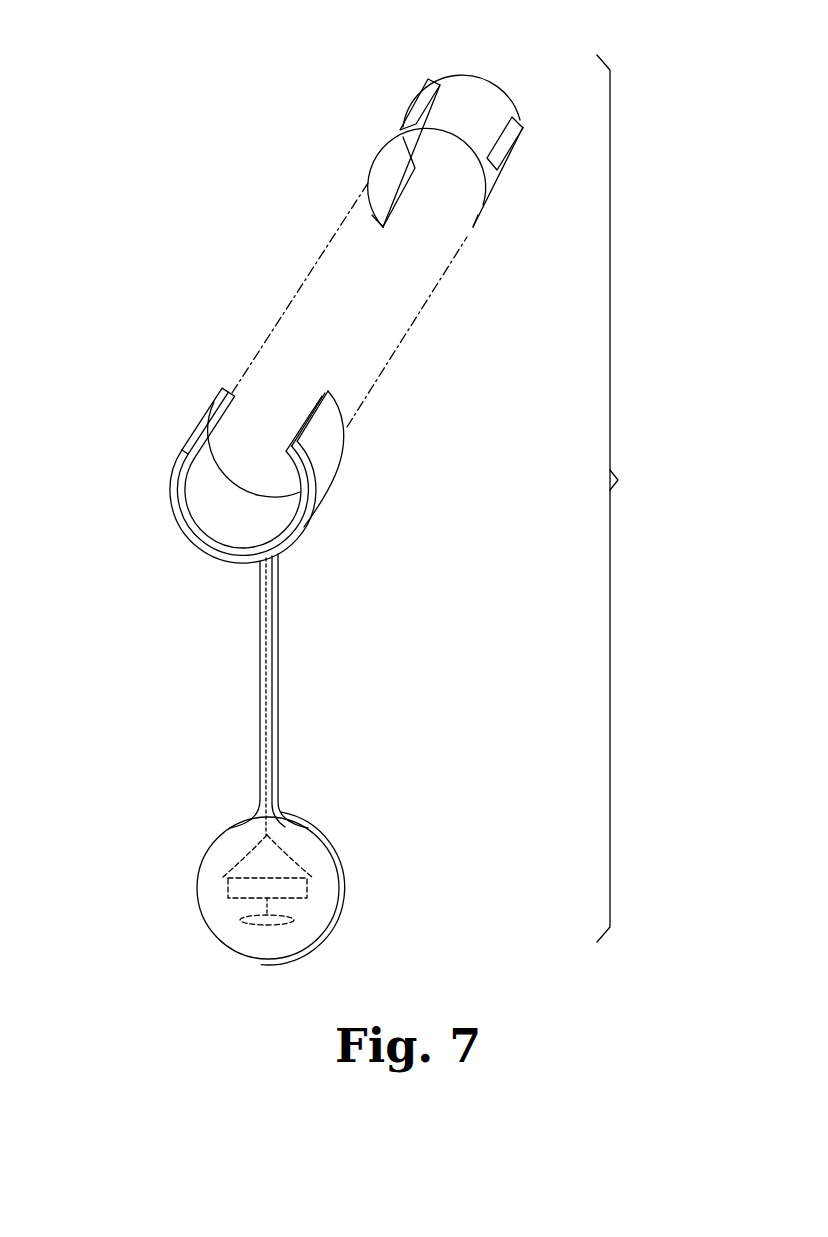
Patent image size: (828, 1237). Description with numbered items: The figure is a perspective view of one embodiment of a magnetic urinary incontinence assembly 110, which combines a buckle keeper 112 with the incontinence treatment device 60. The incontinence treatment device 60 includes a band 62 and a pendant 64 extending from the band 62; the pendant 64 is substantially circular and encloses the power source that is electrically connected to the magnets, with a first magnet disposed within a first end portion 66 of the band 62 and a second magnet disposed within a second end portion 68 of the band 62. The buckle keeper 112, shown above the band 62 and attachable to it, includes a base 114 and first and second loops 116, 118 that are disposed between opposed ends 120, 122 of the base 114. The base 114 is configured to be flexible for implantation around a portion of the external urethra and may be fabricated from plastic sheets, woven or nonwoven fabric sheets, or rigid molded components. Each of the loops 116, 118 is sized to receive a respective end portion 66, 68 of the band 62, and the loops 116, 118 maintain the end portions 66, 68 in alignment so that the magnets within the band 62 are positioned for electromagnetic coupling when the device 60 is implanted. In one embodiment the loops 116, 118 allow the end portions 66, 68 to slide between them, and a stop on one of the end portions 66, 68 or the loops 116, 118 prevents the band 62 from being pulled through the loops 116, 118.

The incontinence treatment device 60 is at (330, 675).
The band 62 is at (273, 475).
The pendant 64 is at (318, 836).
The first end portion 66 is at (222, 468).
The second end portion 68 is at (327, 431).
The magnetic urinary incontinence assembly 110 is at (625, 498).
The buckle keeper 112 is at (478, 153).
The base 114 is at (479, 102).
The first loop 116 is at (417, 103).
The second loop 118 is at (510, 153).
The first opposed end 120 is at (398, 212).
The second opposed end 122 is at (472, 218).